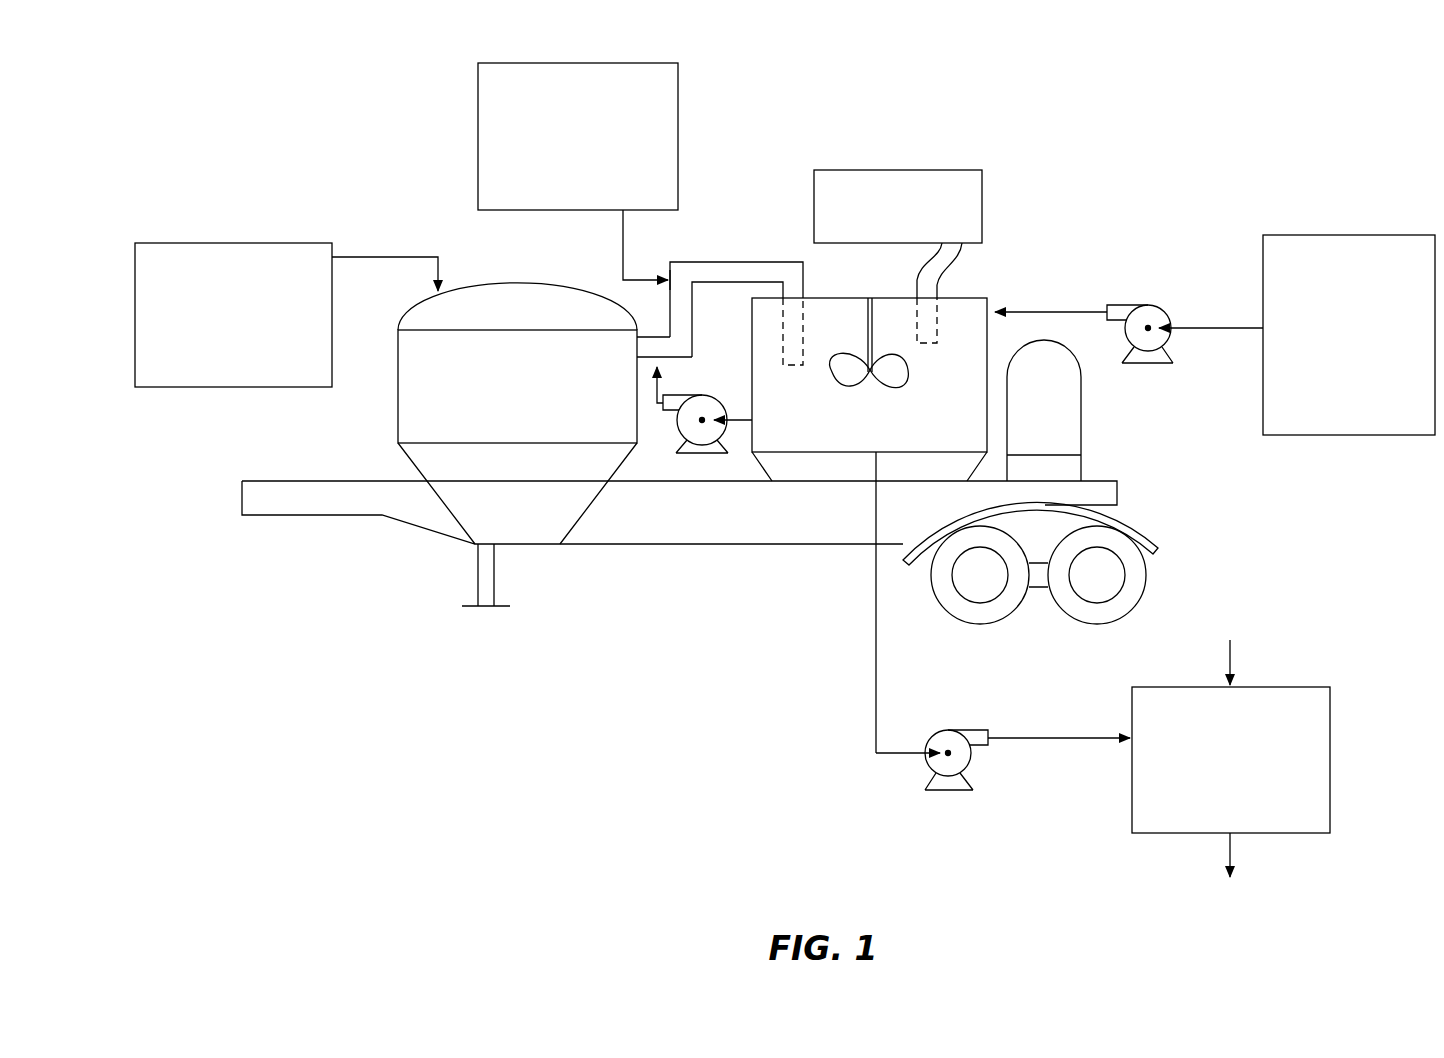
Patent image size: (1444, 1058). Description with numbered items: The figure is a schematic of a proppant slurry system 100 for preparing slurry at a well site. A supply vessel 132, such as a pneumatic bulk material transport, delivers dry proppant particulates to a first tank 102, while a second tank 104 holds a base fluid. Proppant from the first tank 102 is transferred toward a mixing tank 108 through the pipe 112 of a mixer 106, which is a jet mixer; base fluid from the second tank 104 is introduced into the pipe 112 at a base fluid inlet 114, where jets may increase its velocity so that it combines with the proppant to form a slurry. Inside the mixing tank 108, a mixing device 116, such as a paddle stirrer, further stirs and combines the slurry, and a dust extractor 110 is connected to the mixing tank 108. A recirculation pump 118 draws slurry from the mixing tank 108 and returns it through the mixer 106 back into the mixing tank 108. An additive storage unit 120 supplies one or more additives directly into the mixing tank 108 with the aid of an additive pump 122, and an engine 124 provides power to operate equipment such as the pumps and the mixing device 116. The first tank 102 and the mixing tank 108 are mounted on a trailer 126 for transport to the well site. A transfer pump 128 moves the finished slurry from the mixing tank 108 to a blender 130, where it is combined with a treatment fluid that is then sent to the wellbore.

The proppant slurry system 100 is at (1180, 108).
The first tank 102 is at (497, 401).
The second tank 104 is at (557, 149).
The mixer 106 is at (750, 262).
The mixing tank 108 is at (851, 436).
The dust extractor 110 is at (877, 221).
The pipe 112 is at (653, 335).
The base fluid inlet 114 is at (668, 282).
The mixing device 116 is at (910, 373).
The recirculation pump 118 is at (688, 433).
The additive storage unit 120 is at (1328, 349).
The additive pump 122 is at (1152, 365).
The engine 124 is at (1081, 418).
The trailer 126 is at (298, 516).
The transfer pump 128 is at (928, 768).
The blender 130 is at (1210, 773).
The supply vessel 132 is at (214, 329).